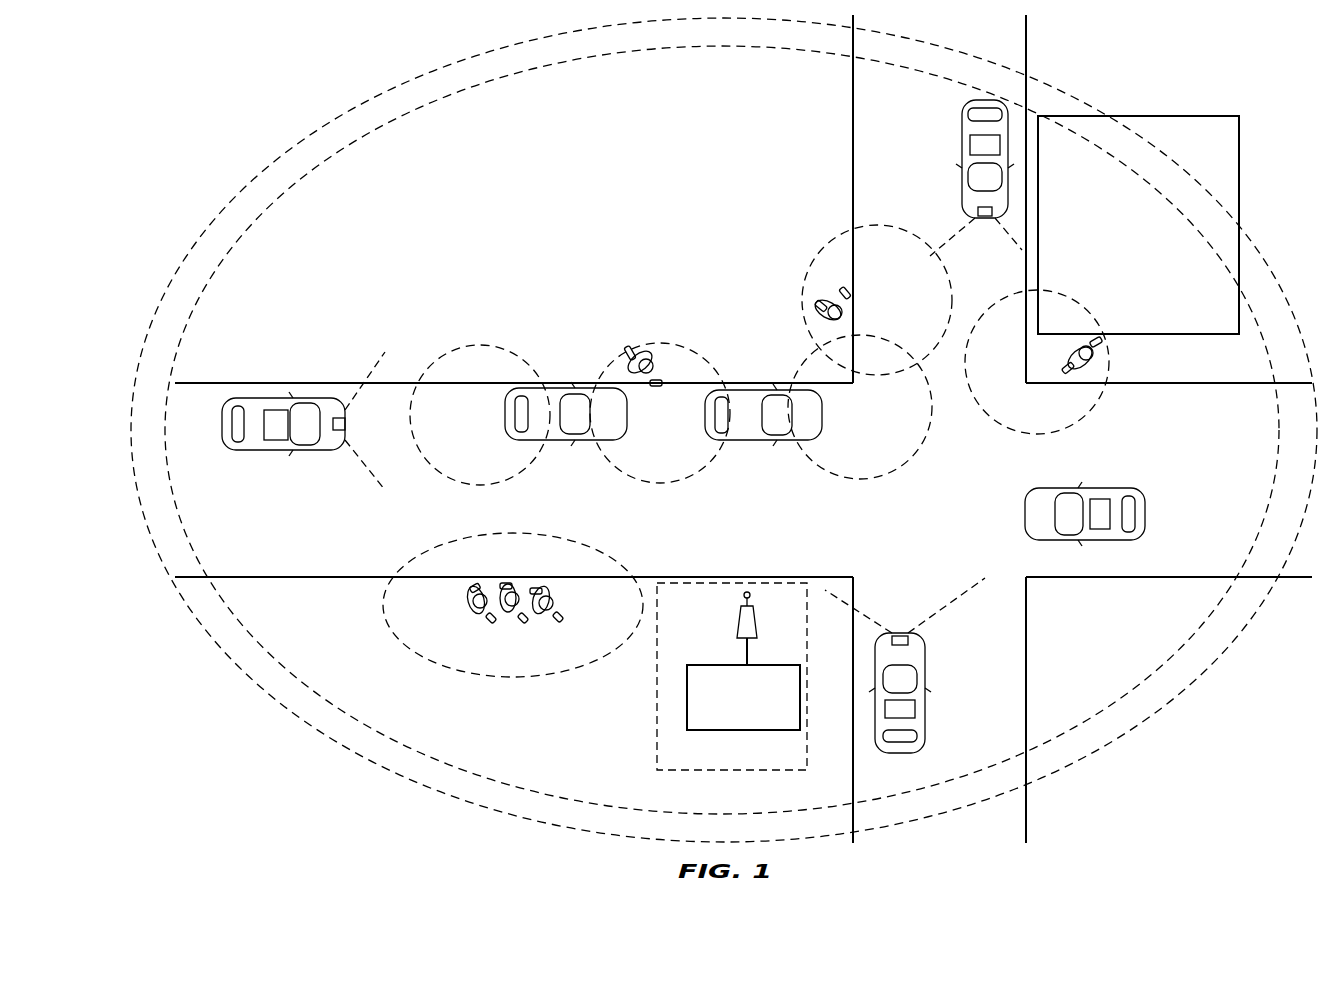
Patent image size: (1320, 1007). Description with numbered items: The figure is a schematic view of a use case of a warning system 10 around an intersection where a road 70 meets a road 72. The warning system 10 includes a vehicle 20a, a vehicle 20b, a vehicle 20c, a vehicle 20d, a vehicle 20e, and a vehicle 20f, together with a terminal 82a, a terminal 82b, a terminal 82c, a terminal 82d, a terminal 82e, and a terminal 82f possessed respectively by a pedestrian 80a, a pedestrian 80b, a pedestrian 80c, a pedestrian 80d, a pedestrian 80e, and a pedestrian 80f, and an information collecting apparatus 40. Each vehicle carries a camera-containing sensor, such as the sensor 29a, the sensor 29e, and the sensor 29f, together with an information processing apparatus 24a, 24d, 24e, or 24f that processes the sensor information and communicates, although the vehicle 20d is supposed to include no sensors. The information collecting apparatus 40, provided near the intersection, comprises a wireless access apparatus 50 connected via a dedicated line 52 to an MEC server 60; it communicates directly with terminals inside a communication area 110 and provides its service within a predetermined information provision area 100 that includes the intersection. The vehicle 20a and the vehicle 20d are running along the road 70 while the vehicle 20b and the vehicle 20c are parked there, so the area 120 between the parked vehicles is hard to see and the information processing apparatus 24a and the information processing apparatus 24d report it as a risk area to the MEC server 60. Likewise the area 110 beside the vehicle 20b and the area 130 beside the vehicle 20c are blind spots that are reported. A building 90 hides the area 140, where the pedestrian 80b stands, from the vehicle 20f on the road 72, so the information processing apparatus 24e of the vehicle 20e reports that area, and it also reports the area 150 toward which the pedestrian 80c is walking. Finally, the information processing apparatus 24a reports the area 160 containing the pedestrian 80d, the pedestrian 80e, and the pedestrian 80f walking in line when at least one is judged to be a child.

The warning system 10 is at (1268, 784).
The vehicle 20a is at (296, 421).
The vehicle 20b is at (506, 440).
The vehicle 20c is at (776, 445).
The vehicle 20d is at (1106, 508).
The vehicle 20e is at (906, 681).
The vehicle 20f is at (962, 182).
The information processing apparatus 24a is at (275, 442).
The information processing apparatus 24d is at (1098, 488).
The information processing apparatus 24e is at (918, 707).
The information processing apparatus 24f is at (970, 145).
The sensor 29a is at (346, 424).
The sensor 29e is at (901, 634).
The sensor 29f is at (985, 220).
The information collecting apparatus 40 is at (728, 770).
The wireless access apparatus 50 is at (738, 606).
The dedicated line 52 is at (744, 645).
The MEC server 60 is at (740, 730).
The road 70 is at (260, 561).
The road 72 is at (893, 169).
The pedestrian 80a is at (655, 368).
The pedestrian 80b is at (1100, 375).
The pedestrian 80c is at (833, 298).
The pedestrian 80d is at (572, 628).
The pedestrian 80e is at (519, 608).
The pedestrian 80f is at (452, 627).
The terminal 82a is at (658, 390).
The terminal 82b is at (1065, 374).
The terminal 82c is at (848, 290).
The terminal 82d is at (572, 602).
The terminal 82e is at (522, 624).
The terminal 82f is at (488, 624).
The building 90 is at (1193, 116).
The information provision area 100 is at (395, 120).
The communication area 110 is at (356, 108).
The area 120 is at (695, 342).
The area 130 is at (837, 478).
The area 140 is at (991, 418).
The area 150 is at (831, 238).
The area 160 is at (426, 666).